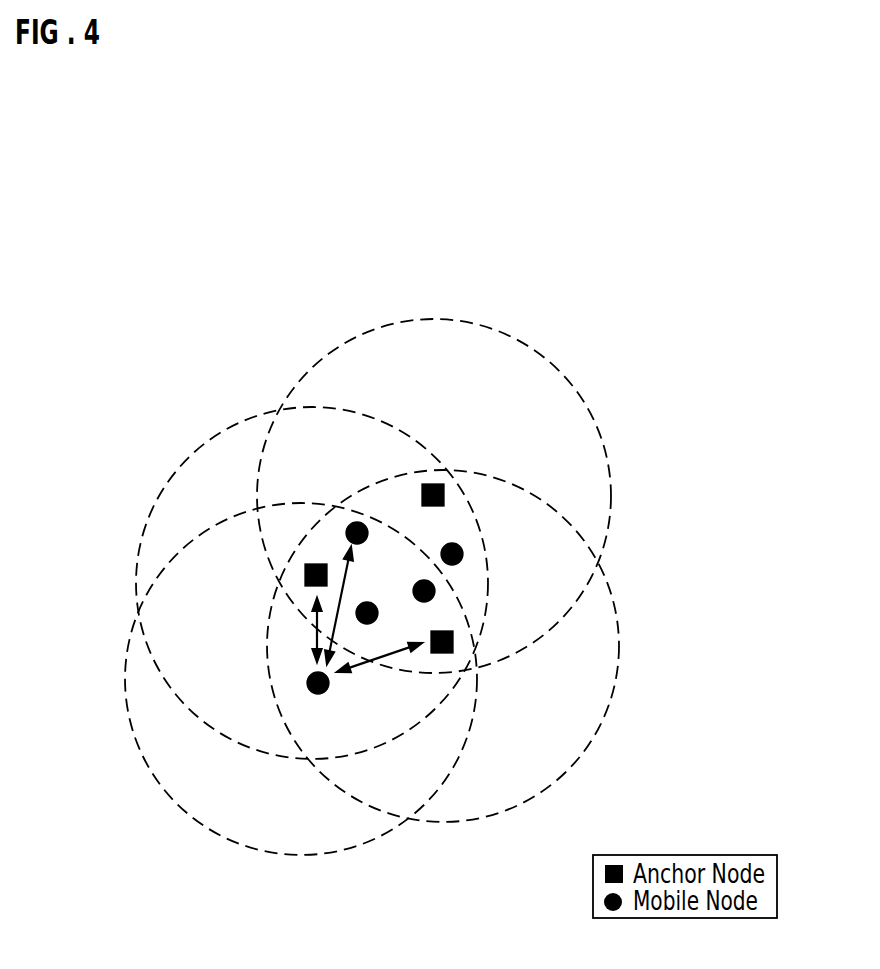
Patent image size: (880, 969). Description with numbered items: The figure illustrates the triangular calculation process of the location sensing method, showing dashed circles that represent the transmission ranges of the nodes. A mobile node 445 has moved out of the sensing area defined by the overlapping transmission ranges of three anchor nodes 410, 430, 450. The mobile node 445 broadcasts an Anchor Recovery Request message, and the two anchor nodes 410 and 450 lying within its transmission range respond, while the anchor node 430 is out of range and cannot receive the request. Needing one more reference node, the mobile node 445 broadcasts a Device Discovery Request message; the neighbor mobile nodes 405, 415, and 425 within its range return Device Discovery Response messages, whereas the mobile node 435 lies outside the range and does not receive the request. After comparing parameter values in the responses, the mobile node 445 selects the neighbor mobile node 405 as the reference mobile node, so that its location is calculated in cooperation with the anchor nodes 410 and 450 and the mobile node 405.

The mobile node 405 is at (355, 522).
The anchor node 410 is at (305, 573).
The mobile node 415 is at (378, 612).
The mobile node 425 is at (432, 591).
The anchor node 430 is at (440, 488).
The mobile node 435 is at (460, 555).
The mobile node 445 is at (307, 682).
The anchor node 450 is at (452, 651).